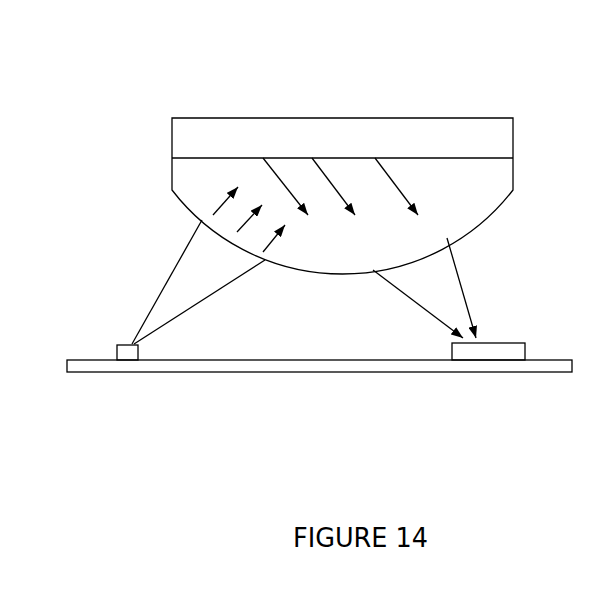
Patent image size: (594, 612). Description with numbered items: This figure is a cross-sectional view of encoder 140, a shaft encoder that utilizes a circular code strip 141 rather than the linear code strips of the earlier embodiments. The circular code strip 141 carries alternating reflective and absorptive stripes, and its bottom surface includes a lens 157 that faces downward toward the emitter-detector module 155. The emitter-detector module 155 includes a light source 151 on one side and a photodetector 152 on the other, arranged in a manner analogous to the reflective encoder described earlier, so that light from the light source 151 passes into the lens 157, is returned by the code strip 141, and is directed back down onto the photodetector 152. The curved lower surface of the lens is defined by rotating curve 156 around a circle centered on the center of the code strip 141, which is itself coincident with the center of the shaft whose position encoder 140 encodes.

The encoder 140 is at (78, 76).
The circular code strip 141 is at (353, 118).
The lens 157 is at (188, 167).
The curve 156 is at (462, 232).
The emitter-detector module 155 is at (368, 371).
The light source 151 is at (132, 357).
The photodetector 152 is at (510, 347).